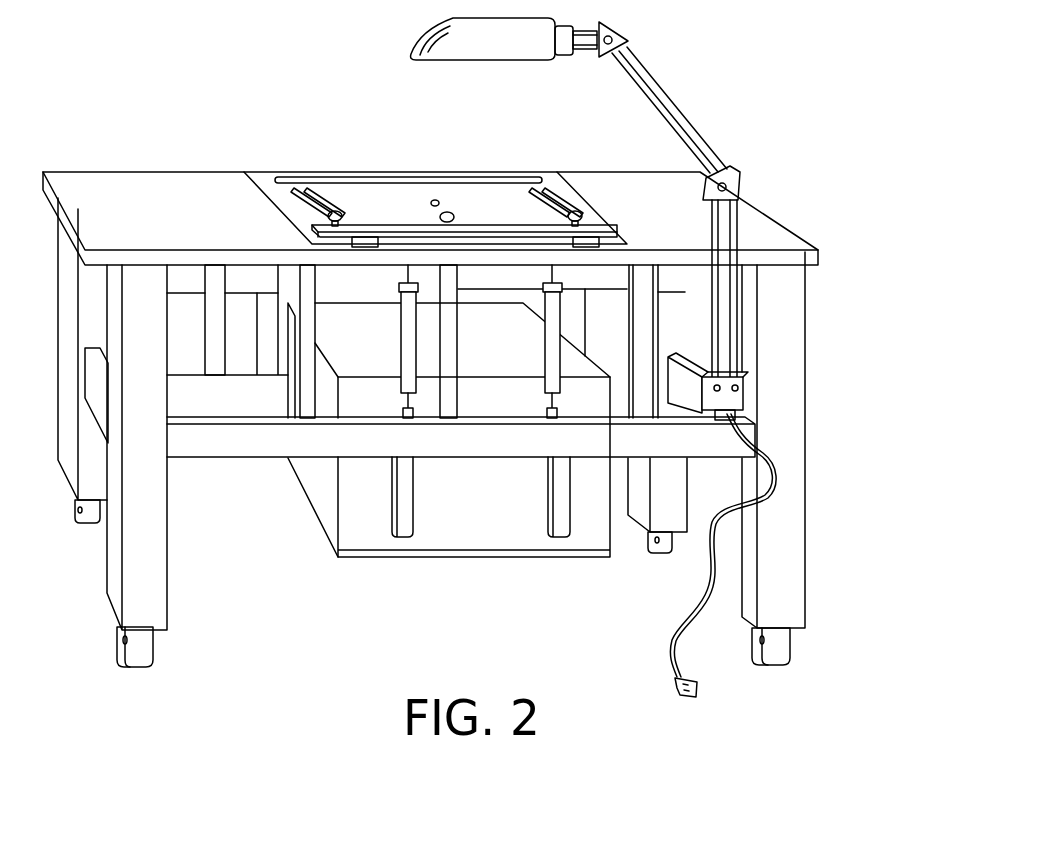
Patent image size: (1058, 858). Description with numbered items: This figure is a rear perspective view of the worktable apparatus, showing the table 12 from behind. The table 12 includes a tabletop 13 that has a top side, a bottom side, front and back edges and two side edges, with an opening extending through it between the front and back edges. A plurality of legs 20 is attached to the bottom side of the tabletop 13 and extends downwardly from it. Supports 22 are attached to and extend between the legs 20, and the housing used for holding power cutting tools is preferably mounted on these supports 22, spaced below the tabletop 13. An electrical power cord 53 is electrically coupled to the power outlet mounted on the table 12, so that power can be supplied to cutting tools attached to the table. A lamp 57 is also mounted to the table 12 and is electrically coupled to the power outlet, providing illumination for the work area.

The table 12 is at (807, 270).
The tabletop 13 is at (818, 254).
The legs 20 is at (807, 533).
The supports 22 is at (247, 438).
The electrical power cord 53 is at (670, 633).
The lamp 57 is at (653, 80).